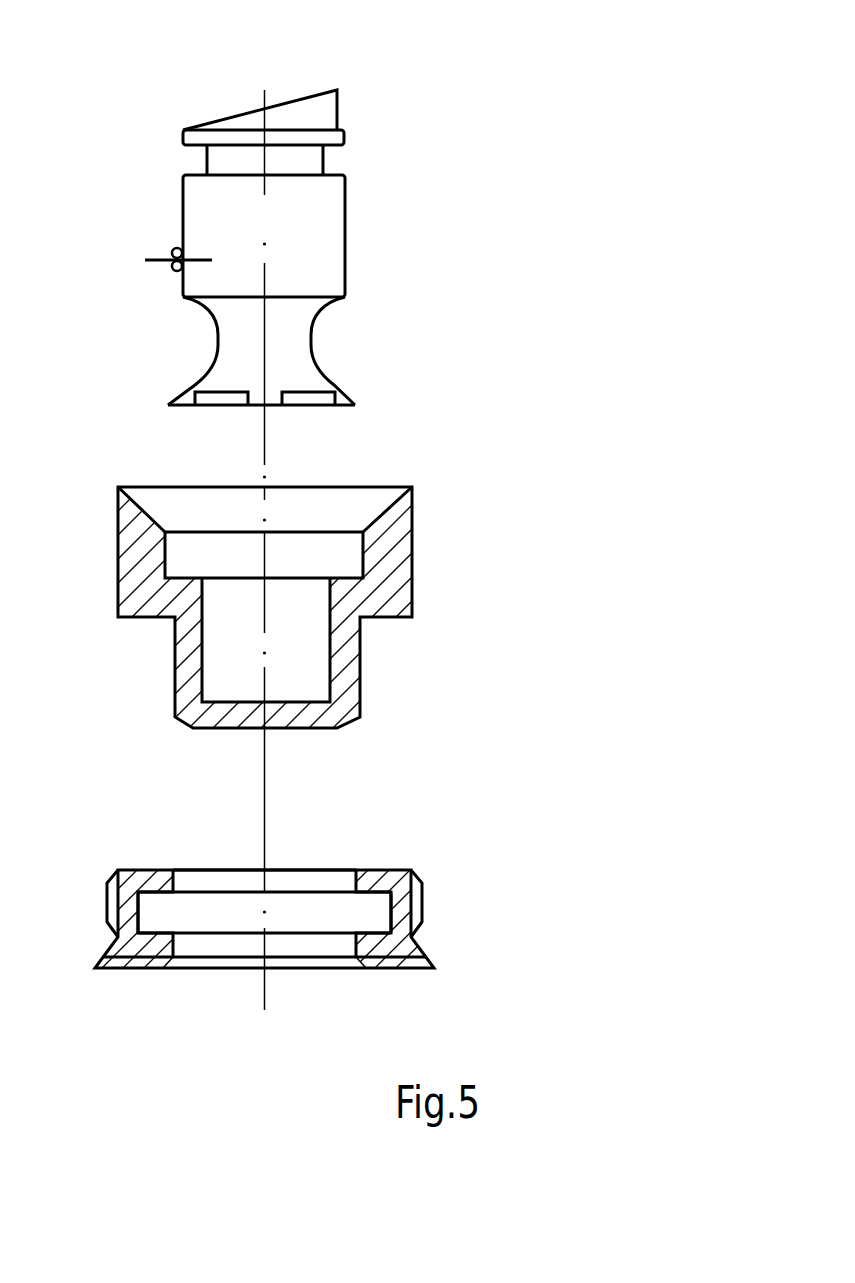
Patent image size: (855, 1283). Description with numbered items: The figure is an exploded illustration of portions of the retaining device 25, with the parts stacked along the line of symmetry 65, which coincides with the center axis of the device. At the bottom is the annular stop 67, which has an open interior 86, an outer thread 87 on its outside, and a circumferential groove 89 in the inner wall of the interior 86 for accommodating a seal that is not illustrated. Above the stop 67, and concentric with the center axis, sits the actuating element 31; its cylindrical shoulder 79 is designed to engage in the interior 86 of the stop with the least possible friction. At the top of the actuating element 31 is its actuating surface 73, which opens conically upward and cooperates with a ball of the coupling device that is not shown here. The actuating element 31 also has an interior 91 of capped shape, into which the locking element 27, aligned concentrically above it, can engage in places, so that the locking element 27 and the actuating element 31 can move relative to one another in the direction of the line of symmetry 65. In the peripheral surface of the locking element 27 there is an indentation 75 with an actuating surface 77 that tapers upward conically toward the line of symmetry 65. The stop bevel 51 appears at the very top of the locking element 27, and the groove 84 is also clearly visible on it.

The retaining device 25 is at (508, 167).
The stop bevel 51 is at (302, 95).
The groove 84 is at (335, 157).
The locking element 27 is at (325, 255).
The indentation 75 is at (328, 348).
The actuating surface 77 is at (333, 377).
The actuating surface 73 is at (372, 518).
The interior 91 is at (333, 570).
The actuating element 31 is at (323, 567).
The cylindrical shoulder 79 is at (345, 702).
The open interior 86 is at (343, 880).
The annular stop 67 is at (265, 858).
The outer thread 87 is at (422, 892).
The circumferential groove 89 is at (375, 917).
The line of symmetry 65 is at (268, 1000).